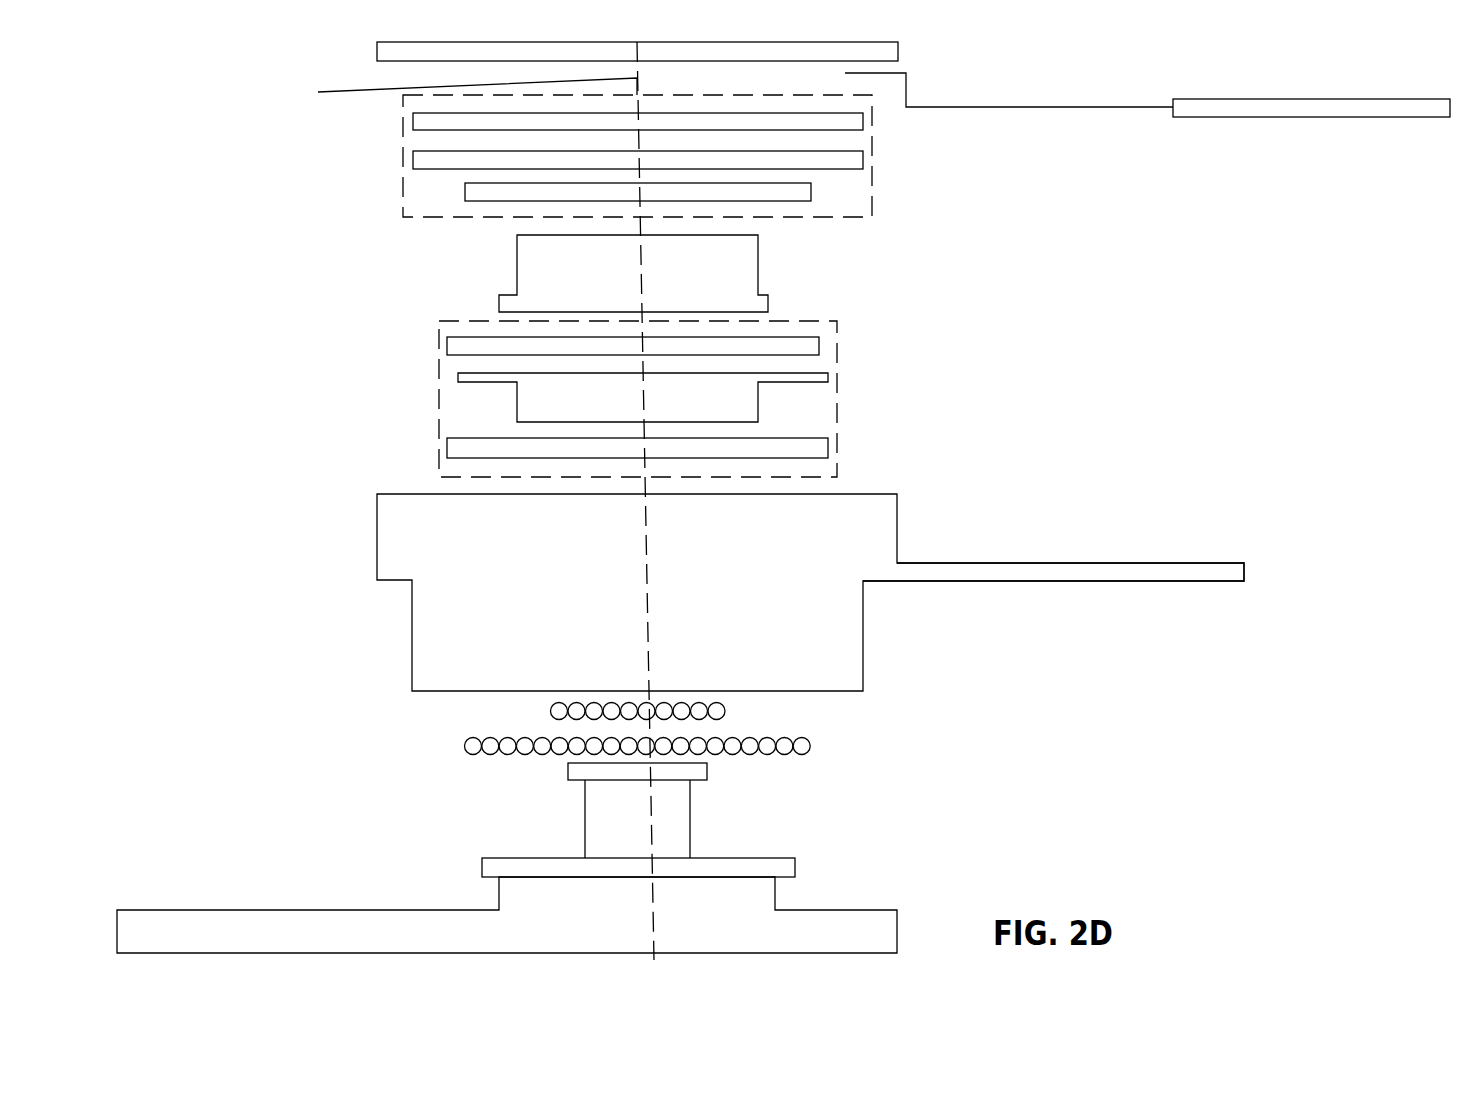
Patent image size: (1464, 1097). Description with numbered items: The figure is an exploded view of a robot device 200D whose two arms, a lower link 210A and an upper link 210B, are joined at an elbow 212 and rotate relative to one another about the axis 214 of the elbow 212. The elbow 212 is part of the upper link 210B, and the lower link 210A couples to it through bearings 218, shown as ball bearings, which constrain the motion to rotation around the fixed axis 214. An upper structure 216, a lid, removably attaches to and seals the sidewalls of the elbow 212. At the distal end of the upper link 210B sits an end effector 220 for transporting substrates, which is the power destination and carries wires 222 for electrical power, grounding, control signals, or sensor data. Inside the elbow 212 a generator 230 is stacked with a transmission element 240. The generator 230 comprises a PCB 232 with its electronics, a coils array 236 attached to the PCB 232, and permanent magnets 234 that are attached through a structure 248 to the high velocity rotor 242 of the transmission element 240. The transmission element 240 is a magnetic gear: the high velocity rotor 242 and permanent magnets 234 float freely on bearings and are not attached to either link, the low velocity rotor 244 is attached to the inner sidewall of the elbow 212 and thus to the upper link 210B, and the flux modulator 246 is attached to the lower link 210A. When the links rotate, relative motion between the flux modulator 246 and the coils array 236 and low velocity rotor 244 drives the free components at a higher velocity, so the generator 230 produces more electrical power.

The robot device 200D is at (220, 91).
The upper structure 216 is at (377, 56).
The axis 214 is at (318, 92).
The wires 222 is at (1118, 107).
The end effector 220 is at (1313, 99).
The generator 230 is at (872, 138).
The PCB 232 is at (863, 121).
The coils array 236 is at (863, 169).
The permanent magnets 234 is at (811, 190).
The structure 248 is at (555, 265).
The transmission element 240 is at (837, 415).
The high velocity rotor 242 is at (819, 346).
The flux modulator 246 is at (562, 408).
The low velocity rotor 244 is at (447, 449).
The elbow 212 is at (336, 560).
The link 210B is at (1138, 581).
The bearings 218 is at (549, 710).
The link 210A is at (265, 856).